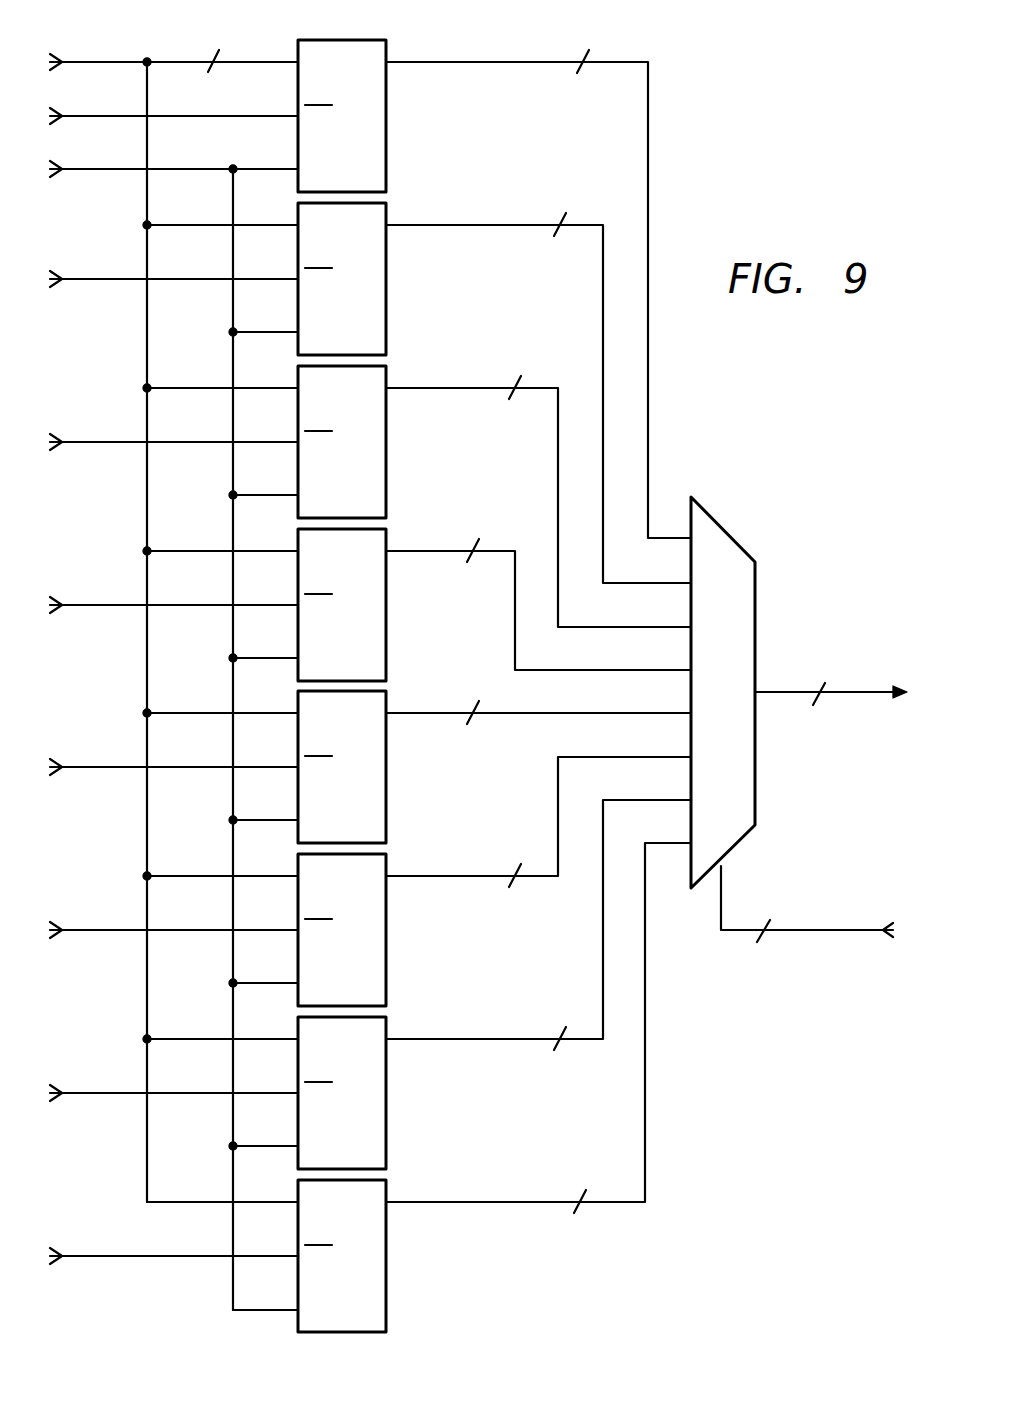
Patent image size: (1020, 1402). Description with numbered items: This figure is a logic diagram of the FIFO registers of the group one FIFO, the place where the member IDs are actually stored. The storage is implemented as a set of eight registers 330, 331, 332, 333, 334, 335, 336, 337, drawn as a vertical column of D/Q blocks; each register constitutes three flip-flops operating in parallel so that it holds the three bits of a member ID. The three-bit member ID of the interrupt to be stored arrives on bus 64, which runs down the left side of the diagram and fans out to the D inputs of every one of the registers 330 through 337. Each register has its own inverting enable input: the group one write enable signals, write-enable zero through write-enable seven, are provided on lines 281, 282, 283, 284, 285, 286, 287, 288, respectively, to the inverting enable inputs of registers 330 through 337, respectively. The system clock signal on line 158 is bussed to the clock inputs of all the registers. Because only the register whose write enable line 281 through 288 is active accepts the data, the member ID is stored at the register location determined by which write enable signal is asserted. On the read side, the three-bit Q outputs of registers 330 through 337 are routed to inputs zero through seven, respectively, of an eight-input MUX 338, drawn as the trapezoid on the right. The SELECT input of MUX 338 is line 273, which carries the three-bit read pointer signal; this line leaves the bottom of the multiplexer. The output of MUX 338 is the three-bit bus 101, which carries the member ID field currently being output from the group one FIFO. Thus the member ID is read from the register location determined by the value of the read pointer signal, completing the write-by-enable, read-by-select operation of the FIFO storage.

The bus 64 is at (82, 61).
The line 281 is at (109, 116).
The line 158 is at (109, 169).
The line 282 is at (98, 279).
The line 283 is at (98, 442).
The line 284 is at (98, 605).
The line 285 is at (98, 767).
The line 286 is at (98, 930).
The line 287 is at (98, 1093).
The line 288 is at (98, 1256).
The register 330 is at (386, 120).
The register 331 is at (386, 283).
The register 332 is at (386, 446).
The register 333 is at (386, 609).
The register 334 is at (386, 771).
The register 335 is at (386, 934).
The register 336 is at (386, 1097).
The register 337 is at (386, 1260).
The 8-input MUX 338 is at (722, 525).
The bus 101 is at (866, 690).
The line 273 is at (819, 928).